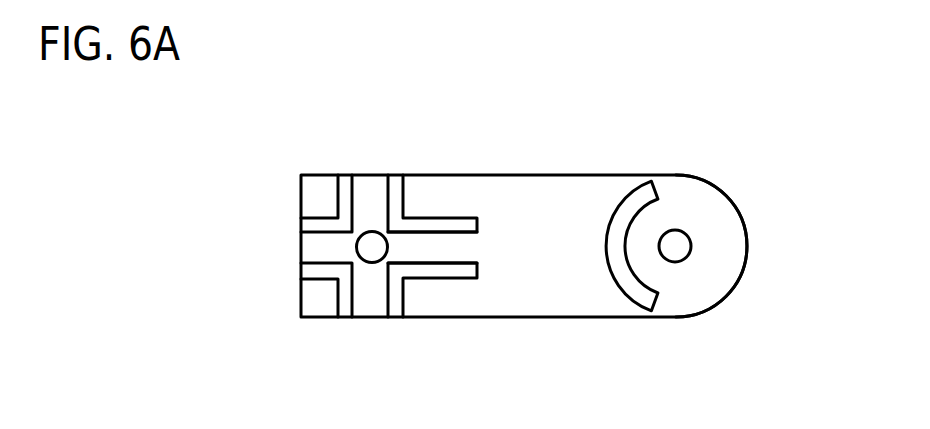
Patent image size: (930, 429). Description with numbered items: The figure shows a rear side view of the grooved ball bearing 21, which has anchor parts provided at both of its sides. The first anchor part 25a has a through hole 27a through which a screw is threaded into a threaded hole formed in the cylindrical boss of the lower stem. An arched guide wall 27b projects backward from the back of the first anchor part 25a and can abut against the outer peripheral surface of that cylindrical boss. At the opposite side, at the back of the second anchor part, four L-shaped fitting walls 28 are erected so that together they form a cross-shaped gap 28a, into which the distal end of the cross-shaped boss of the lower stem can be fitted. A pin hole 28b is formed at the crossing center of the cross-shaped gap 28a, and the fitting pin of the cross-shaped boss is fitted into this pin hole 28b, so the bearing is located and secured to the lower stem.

The grooved ball bearing 21 is at (580, 318).
The first anchor part 25a is at (737, 287).
The through hole 27a is at (677, 246).
The arched guide wall 27b is at (632, 201).
The L-shaped fitting walls 28 is at (343, 188).
The cross-shaped gap 28a is at (437, 248).
The pin hole 28b is at (363, 247).